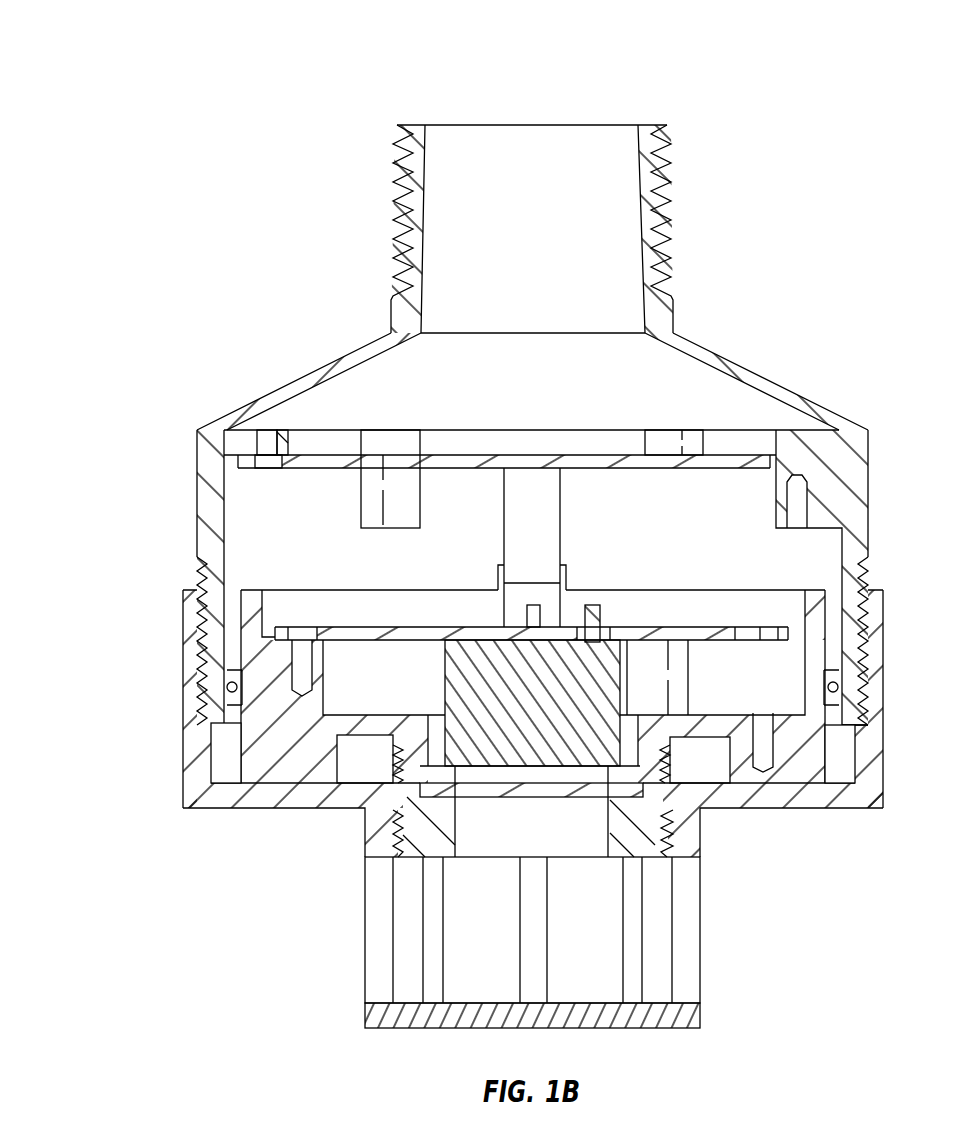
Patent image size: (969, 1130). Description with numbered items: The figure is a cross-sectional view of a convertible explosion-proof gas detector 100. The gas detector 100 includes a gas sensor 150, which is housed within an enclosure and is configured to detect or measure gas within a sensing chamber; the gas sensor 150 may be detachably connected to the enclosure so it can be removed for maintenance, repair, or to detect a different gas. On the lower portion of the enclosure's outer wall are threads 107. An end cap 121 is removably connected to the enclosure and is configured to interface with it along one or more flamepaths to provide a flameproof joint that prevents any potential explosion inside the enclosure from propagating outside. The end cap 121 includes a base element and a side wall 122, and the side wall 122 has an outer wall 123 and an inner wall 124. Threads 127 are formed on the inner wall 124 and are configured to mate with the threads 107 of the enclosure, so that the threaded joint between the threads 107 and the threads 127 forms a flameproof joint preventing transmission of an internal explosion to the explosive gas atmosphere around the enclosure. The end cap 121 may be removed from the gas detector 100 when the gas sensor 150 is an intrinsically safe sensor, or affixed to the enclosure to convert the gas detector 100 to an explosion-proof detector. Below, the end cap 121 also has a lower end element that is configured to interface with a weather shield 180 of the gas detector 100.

The gas detector 100 is at (692, 59).
The threads 107 is at (197, 572).
The threads 127 is at (197, 627).
The outer wall 123 is at (184, 743).
The side wall 122 is at (150, 789).
The end cap 121 is at (308, 808).
The inner wall 124 is at (212, 763).
The gas sensor 150 is at (578, 748).
The weather shield 180 is at (650, 963).